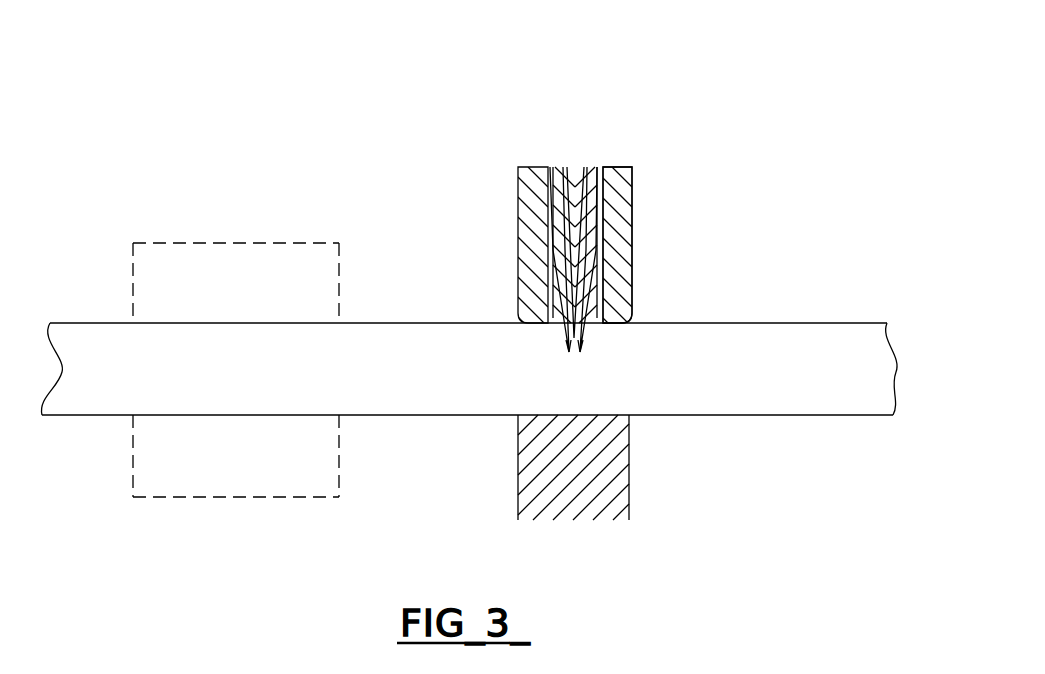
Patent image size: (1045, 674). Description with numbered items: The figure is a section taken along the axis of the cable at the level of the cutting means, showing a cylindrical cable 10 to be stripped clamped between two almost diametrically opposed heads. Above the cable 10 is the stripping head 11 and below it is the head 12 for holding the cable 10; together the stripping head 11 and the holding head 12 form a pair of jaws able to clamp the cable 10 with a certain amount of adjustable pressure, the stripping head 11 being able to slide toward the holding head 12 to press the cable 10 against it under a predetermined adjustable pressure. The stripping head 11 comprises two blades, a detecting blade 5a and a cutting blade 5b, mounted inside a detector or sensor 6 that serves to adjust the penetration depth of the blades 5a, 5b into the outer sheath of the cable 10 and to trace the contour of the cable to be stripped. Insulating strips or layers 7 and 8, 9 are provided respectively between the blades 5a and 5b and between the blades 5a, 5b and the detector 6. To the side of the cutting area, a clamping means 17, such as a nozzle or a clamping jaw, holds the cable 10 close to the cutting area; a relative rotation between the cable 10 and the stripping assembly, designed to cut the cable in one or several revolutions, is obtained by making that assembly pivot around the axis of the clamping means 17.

The detecting blade 5a is at (566, 344).
The cutting blade 5b is at (583, 328).
The detector 6 is at (550, 297).
The insulating strip 7 is at (575, 172).
The insulating strip 8 is at (552, 172).
The insulating strip 9 is at (603, 180).
The cable 10 is at (423, 345).
The stripping head 11 is at (637, 232).
The holding head 12 is at (637, 467).
The clamping means 17 is at (291, 243).